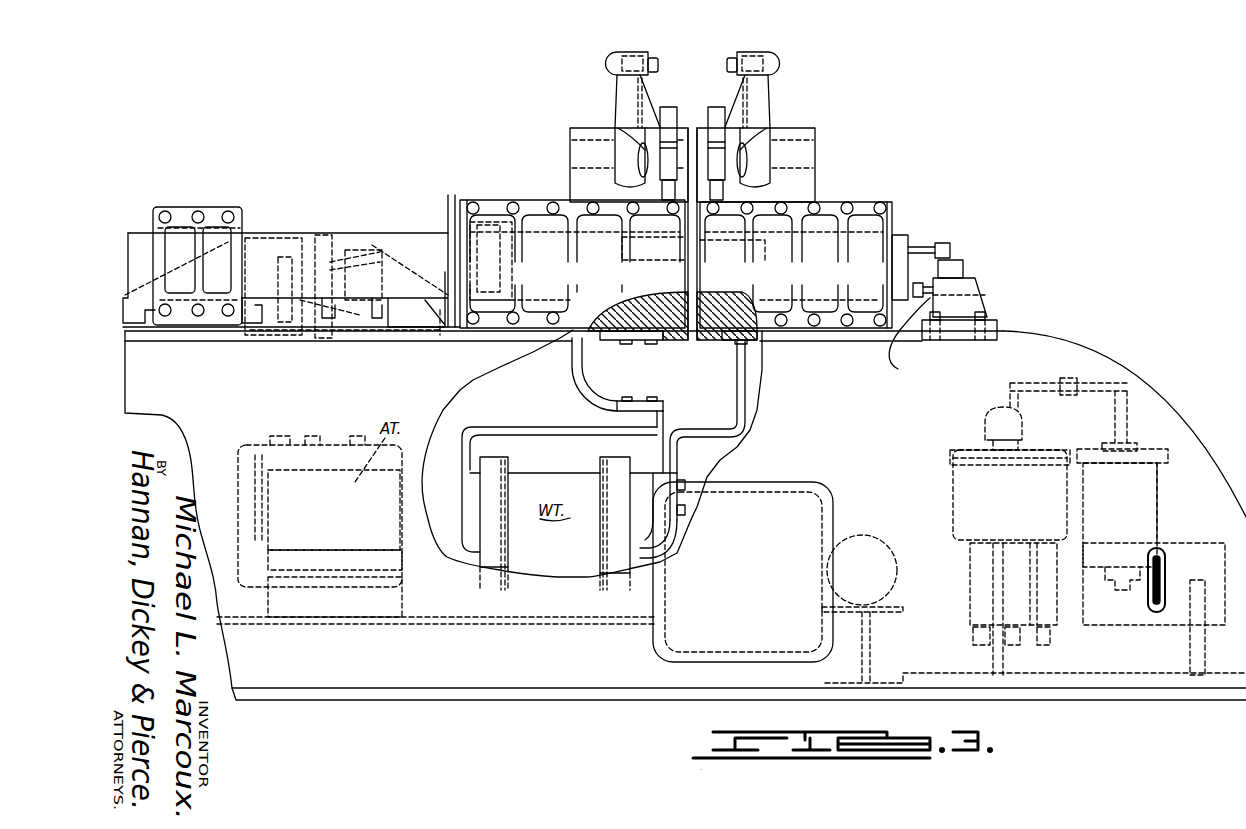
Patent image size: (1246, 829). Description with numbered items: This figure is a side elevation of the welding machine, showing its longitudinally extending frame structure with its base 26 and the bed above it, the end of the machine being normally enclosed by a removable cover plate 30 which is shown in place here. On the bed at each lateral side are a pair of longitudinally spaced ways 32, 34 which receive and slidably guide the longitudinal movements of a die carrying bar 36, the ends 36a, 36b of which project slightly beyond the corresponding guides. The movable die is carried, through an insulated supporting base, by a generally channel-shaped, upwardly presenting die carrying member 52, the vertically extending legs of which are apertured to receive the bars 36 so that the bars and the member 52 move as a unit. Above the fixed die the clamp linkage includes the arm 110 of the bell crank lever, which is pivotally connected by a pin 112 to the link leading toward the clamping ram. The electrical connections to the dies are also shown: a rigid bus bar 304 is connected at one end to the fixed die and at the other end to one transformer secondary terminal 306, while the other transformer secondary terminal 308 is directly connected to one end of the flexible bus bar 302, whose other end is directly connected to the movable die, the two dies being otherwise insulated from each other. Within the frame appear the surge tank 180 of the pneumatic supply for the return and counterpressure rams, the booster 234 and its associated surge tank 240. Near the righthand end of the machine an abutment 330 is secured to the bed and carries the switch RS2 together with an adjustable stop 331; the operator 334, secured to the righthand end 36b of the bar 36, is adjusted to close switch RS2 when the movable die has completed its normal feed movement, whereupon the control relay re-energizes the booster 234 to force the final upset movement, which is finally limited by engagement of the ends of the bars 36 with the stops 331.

The base 26 is at (652, 700).
The removable cover plate 30 is at (1168, 397).
The way 32 is at (196, 209).
The way 34 is at (862, 202).
The die carrying bar 36 is at (335, 233).
The end of die carrying bar 36a is at (140, 198).
The righthand end of die carrying bar 36b is at (896, 244).
The die carrying member 52 is at (490, 200).
The arm of bell crank lever 110 is at (613, 85).
The pin 112 is at (728, 61).
The surge tank 180 is at (880, 540).
The booster 234 is at (962, 480).
The surge tank 240 is at (1150, 503).
The flexible bus bar 302 is at (580, 391).
The rigid bus bar 304 is at (680, 458).
The transformer secondary terminal 306 is at (638, 538).
The transformer secondary terminal 308 is at (628, 426).
The abutment 330 is at (985, 302).
The adjustable stop 331 is at (909, 338).
The operator 334 is at (946, 250).
The switch RS2 is at (965, 270).